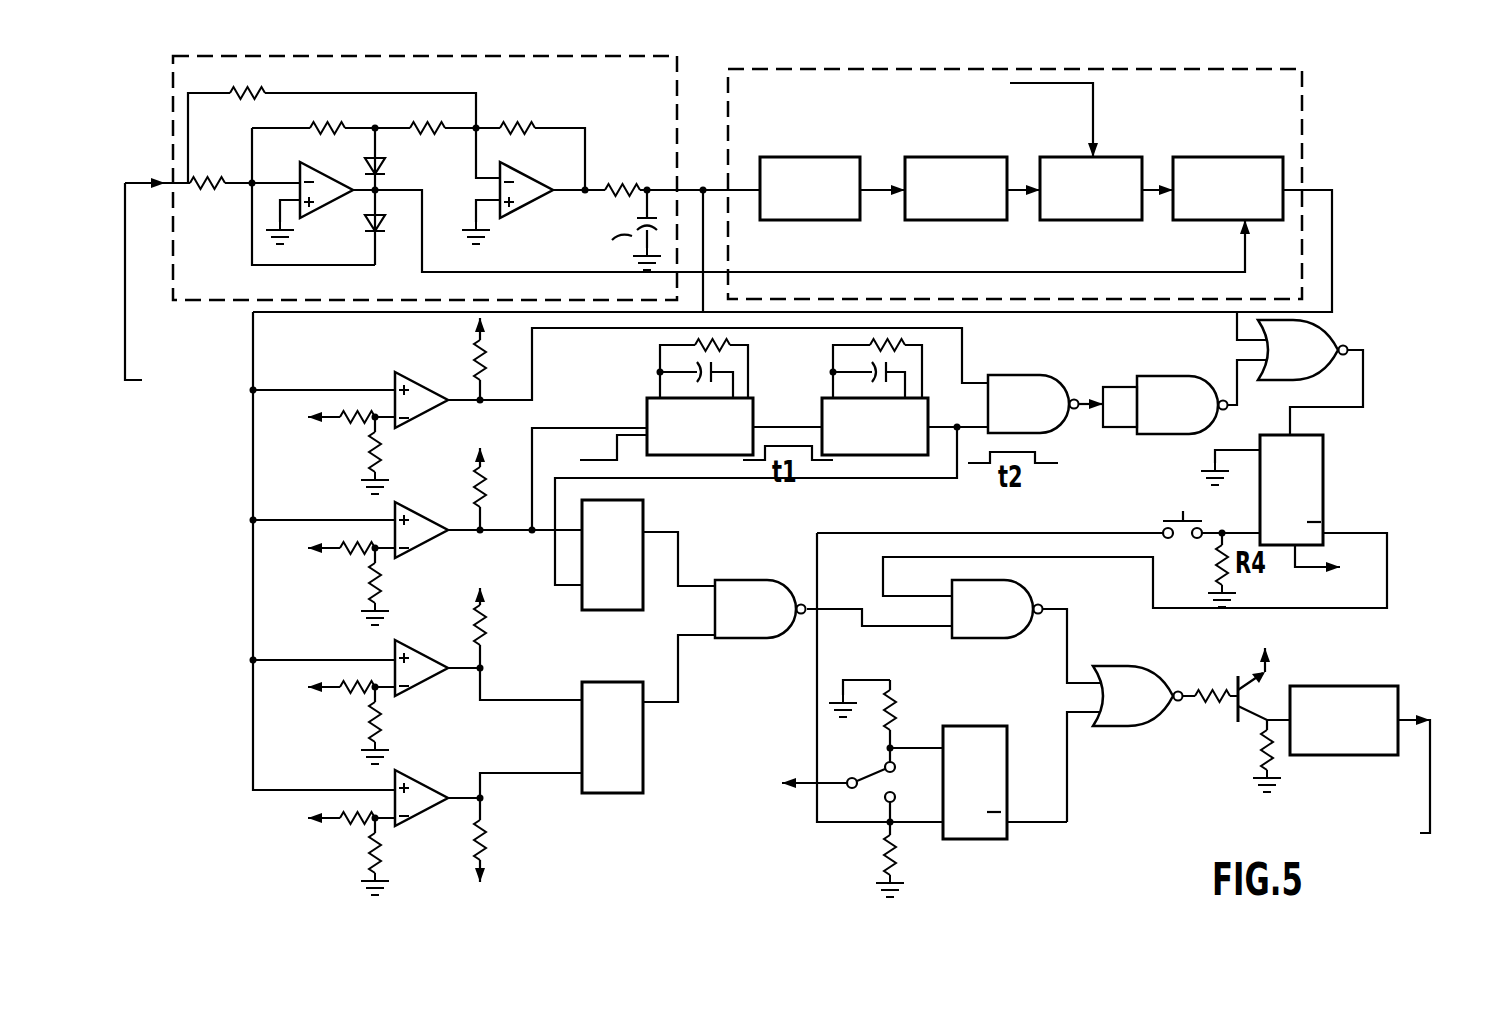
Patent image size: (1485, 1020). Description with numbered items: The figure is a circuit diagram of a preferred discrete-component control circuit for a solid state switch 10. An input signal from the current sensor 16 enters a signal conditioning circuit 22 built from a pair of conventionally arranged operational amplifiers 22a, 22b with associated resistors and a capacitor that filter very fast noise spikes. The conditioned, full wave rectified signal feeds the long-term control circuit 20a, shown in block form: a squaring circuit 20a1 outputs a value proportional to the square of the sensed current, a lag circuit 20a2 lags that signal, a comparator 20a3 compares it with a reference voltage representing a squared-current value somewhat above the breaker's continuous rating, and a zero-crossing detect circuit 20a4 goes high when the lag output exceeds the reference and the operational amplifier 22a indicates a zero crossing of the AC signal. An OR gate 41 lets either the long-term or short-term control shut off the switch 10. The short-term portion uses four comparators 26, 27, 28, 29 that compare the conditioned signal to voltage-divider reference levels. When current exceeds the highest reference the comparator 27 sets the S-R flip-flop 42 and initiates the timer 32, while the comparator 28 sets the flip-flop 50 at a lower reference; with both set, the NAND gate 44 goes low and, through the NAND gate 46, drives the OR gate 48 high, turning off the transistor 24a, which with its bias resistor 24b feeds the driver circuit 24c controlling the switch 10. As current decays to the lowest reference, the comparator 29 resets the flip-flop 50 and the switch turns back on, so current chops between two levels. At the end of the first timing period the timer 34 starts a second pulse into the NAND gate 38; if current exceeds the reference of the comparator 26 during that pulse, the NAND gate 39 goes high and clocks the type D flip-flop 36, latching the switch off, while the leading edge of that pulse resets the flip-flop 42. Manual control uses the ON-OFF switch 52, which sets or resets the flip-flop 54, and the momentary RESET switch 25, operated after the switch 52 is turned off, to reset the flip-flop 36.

The signal conditioning circuit 22 is at (684, 184).
The operational amplifier 22a is at (340, 218).
The operational amplifier 22b is at (540, 218).
The long-term control circuit 20a is at (816, 173).
The squaring circuit 20a1 is at (812, 157).
The lag circuit 20a2 is at (907, 157).
The comparator 20a3 is at (1110, 157).
The zero-crossing detect circuit 20a4 is at (1231, 157).
The current sensor 16 is at (193, 342).
The comparator 26 is at (412, 420).
The comparator 27 is at (412, 550).
The comparator 28 is at (412, 688).
The comparator 29 is at (412, 818).
The timer 32 is at (645, 400).
The timer 34 is at (822, 400).
The NAND gate 38 is at (1050, 375).
The NAND gate 39 is at (1174, 377).
The OR gate 41 is at (1322, 326).
The type D flip-flop 36 is at (1323, 458).
The RESET switch 25 is at (1158, 515).
The S-R flip-flop 42 is at (598, 612).
The flip-flop 50 is at (598, 795).
The NAND gate 44 is at (750, 640).
The NAND gate 46 is at (985, 640).
The OR gate 48 is at (1118, 728).
The transistor 24a is at (1248, 704).
The bias resistor 24b is at (1247, 768).
The driver circuit 24c is at (1338, 686).
The solid state switch 10 is at (1383, 803).
The ON-OFF switch 52 is at (850, 795).
The flip-flop 54 is at (1005, 840).